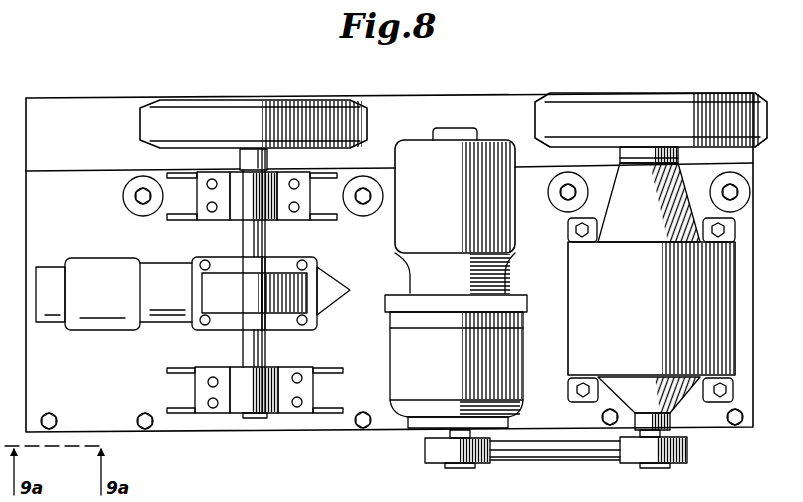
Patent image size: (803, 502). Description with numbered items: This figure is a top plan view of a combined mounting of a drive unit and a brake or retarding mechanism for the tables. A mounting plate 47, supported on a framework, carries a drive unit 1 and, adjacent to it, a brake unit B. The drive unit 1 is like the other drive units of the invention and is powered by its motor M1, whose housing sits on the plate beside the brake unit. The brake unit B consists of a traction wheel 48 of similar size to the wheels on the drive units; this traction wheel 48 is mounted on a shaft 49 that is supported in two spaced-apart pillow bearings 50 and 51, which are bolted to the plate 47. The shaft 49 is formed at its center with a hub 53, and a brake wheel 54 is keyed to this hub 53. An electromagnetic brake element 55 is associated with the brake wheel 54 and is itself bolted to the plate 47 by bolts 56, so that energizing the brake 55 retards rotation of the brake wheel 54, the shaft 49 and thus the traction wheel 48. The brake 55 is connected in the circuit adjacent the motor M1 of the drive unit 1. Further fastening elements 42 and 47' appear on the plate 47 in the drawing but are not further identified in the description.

The drive unit 1 is at (739, 293).
The bolt 42 is at (141, 190).
The mounting plate 47 is at (389, 279).
The bolt of base plate 47' is at (59, 407).
The traction wheel 48 is at (212, 103).
The shaft 49 is at (267, 162).
The pillow bearing 50 is at (258, 209).
The pillow bearing 51 is at (260, 378).
The hub 53 is at (265, 268).
The brake wheel 54 is at (280, 305).
The electromagnetic brake element 55 is at (105, 262).
The bolts 56 is at (271, 291).
The motor M1 is at (418, 160).
The brake unit B is at (160, 329).